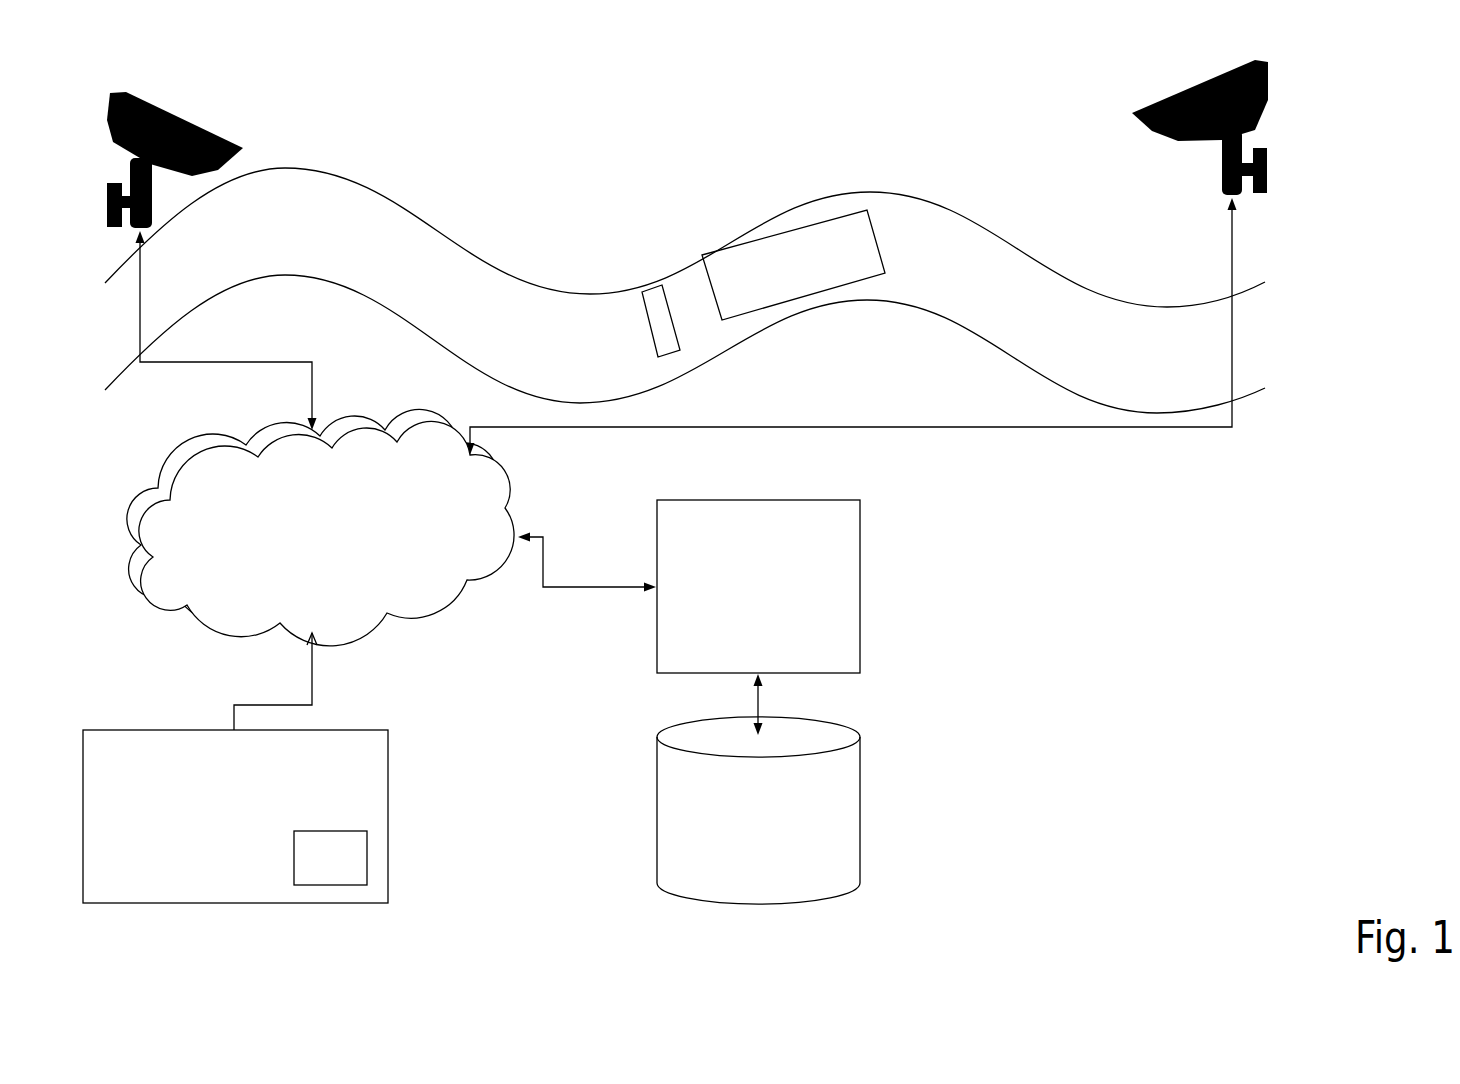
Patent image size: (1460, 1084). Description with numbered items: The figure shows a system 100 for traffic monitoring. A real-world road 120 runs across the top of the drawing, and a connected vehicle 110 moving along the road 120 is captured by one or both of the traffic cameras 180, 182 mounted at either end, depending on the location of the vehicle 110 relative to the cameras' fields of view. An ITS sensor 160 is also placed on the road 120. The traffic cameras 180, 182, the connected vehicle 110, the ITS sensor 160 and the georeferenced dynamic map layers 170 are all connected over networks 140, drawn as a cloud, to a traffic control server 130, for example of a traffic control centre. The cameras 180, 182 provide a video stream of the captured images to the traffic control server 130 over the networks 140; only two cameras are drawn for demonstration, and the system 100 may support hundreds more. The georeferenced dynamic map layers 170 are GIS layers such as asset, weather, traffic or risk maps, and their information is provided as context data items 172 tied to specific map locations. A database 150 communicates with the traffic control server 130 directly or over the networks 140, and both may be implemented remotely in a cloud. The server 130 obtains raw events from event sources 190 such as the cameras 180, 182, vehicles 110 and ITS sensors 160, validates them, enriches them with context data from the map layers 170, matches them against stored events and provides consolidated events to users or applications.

The system for traffic monitoring 100 is at (965, 110).
The connected vehicle 110 is at (830, 230).
The real-world road 120 is at (1005, 252).
The traffic control server 130 is at (739, 663).
The networks 140 is at (304, 552).
The database 150 is at (739, 847).
The ITS sensor 160 is at (645, 293).
The georeferenced dynamic map layers 170 is at (216, 854).
The context data items 172 is at (311, 872).
The traffic camera 180 is at (207, 132).
The traffic camera 182 is at (1267, 88).
The event sources 190 is at (443, 138).